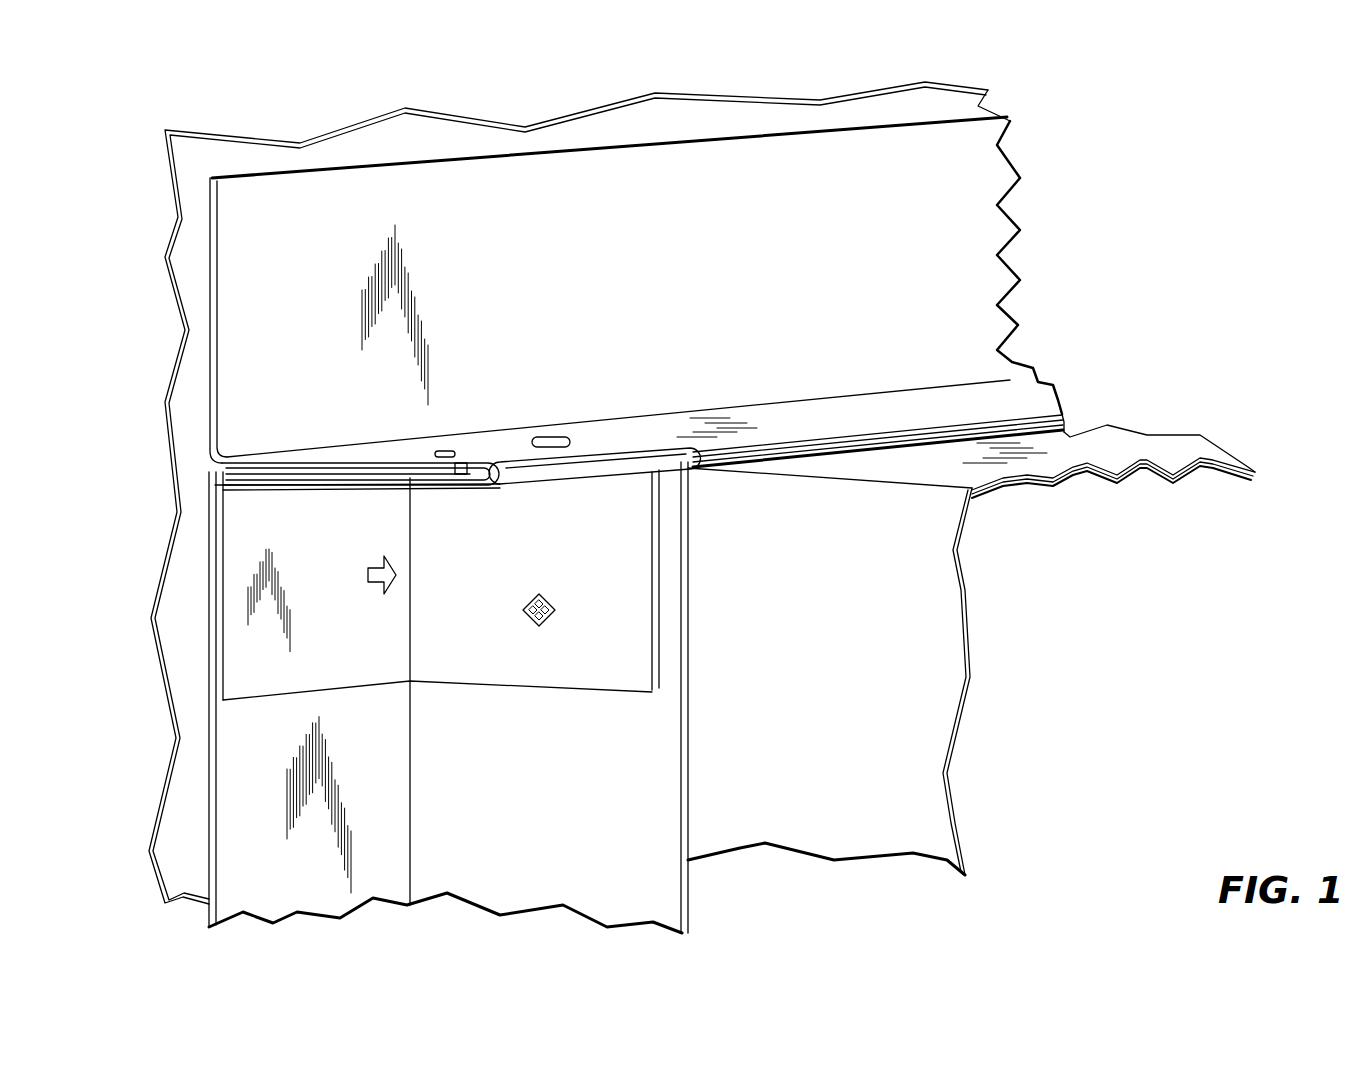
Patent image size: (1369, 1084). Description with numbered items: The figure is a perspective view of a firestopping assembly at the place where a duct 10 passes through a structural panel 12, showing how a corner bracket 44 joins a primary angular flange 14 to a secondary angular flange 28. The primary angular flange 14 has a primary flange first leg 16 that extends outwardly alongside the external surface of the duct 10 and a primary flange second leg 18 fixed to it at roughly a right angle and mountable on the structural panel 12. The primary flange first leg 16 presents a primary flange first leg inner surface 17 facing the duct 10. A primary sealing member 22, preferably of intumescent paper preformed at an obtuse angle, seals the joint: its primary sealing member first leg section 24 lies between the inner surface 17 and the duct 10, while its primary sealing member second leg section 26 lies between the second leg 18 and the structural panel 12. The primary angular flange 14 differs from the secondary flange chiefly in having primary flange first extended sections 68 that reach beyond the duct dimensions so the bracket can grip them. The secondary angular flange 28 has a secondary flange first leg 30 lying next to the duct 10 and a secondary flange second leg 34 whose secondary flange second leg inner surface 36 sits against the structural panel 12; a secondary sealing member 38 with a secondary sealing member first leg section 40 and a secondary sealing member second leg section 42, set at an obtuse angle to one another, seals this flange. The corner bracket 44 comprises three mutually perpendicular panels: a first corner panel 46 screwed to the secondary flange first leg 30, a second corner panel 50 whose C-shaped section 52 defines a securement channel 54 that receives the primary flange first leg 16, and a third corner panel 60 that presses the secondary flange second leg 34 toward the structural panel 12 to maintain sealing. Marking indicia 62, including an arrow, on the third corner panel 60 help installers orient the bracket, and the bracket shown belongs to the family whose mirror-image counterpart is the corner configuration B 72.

The duct 10 is at (823, 704).
The structural panel 12 is at (190, 157).
The primary angular flange 14 is at (793, 266).
The primary flange first leg 16 is at (831, 424).
The primary flange first leg inner surface 17 is at (292, 468).
The primary flange second leg 18 is at (232, 288).
The primary sealing member 22 is at (213, 312).
The primary sealing member first leg section 24 is at (208, 217).
The primary sealing member second leg section 26 is at (896, 450).
The secondary angular flange 28 is at (548, 824).
The secondary flange first leg 30 is at (451, 741).
The secondary flange second leg 34 is at (232, 738).
The secondary flange second leg inner surface 36 is at (225, 768).
The secondary sealing member 38 is at (207, 649).
The secondary sealing member first leg section 40 is at (690, 822).
The secondary sealing member second leg section 42 is at (208, 594).
The corner bracket 44 is at (448, 529).
The first corner panel 46 is at (578, 597).
The second corner panel 50 is at (330, 483).
The C-shaped section 52 is at (613, 470).
The securement channel 54 is at (480, 466).
The third corner panel 60 is at (308, 669).
The marking indicia 62 is at (366, 578).
The primary flange first extended sections 68 is at (230, 460).
The corner configuration B 72 is at (242, 570).